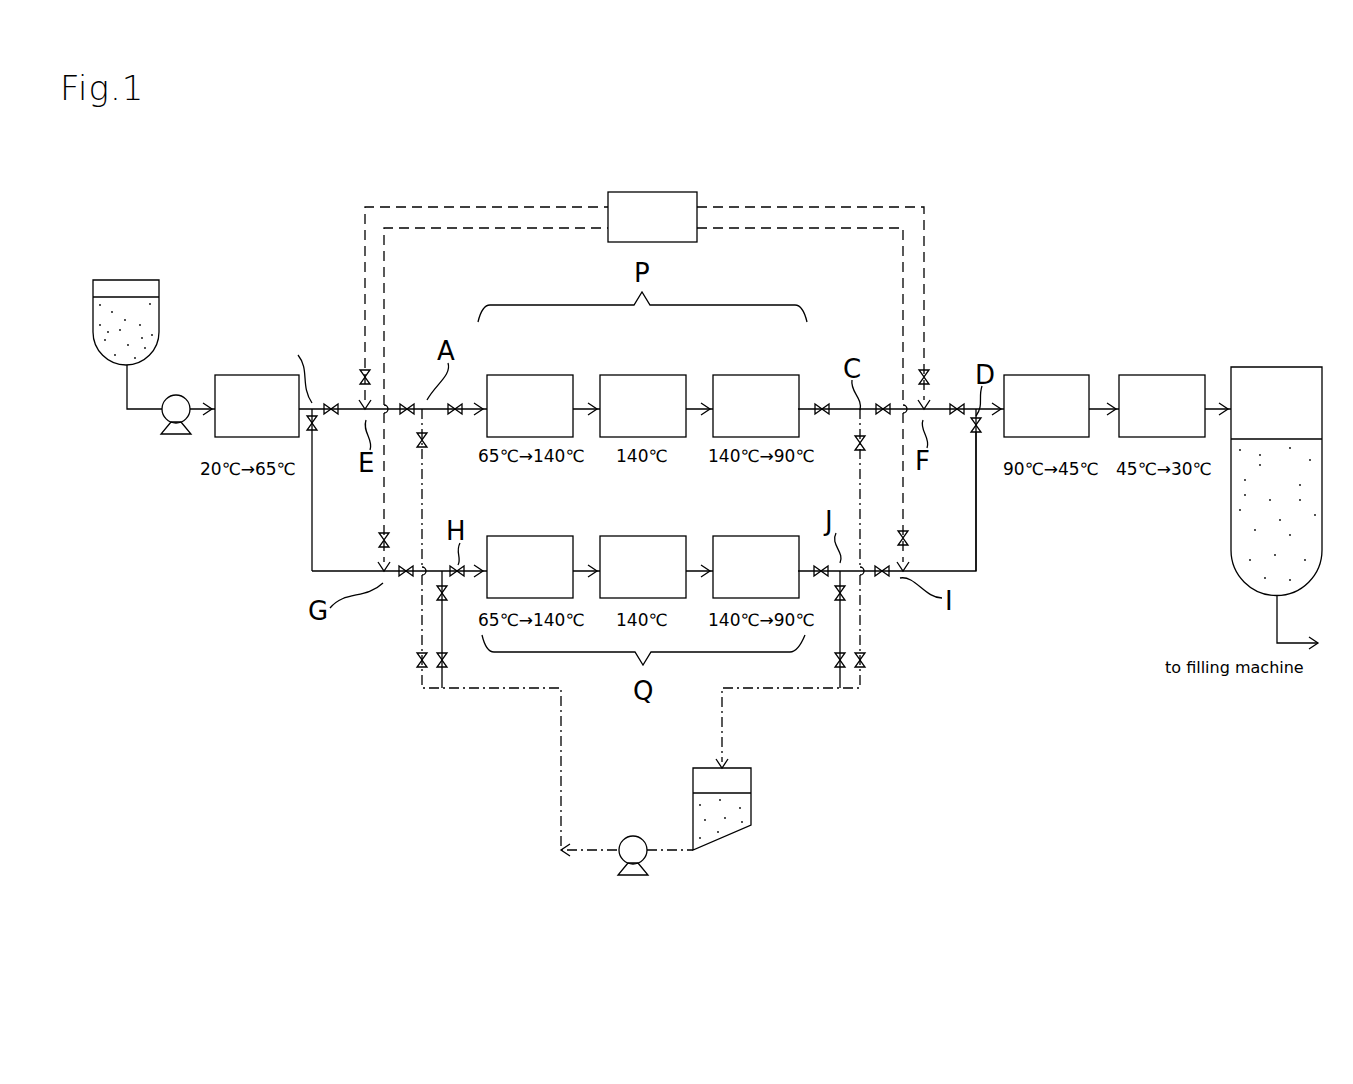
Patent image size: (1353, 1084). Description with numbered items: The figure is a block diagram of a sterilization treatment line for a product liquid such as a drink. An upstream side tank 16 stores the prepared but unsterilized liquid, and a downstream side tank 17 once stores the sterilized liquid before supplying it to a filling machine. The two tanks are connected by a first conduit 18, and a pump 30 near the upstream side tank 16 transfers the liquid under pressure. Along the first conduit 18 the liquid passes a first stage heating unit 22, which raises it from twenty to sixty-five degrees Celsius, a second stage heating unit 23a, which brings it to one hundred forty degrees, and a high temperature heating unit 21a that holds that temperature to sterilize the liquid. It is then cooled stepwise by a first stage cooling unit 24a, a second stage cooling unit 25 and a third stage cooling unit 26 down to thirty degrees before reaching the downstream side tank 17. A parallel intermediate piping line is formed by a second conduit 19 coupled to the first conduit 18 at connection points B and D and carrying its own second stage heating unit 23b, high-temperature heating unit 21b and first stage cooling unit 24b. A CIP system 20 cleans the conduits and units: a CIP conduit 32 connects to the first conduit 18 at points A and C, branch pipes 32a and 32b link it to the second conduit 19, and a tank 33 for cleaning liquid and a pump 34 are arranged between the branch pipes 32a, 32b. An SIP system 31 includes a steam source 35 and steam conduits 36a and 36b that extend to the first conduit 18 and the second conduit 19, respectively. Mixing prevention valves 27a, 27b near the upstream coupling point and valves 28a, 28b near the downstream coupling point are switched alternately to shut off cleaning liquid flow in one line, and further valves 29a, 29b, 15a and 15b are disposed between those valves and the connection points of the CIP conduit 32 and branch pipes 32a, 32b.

The valve 15a is at (882, 400).
The valve 15b is at (882, 582).
The upstream side tank 16 is at (130, 280).
The downstream side tank 17 is at (1272, 367).
The first conduit 18 is at (140, 412).
The second conduit 19 is at (312, 548).
The CIP system 20 is at (733, 846).
The high temperature heating unit 21a is at (651, 375).
The high-temperature heating unit 21b is at (651, 536).
The first stage heating unit 22 is at (257, 374).
The second stage heating unit 23a is at (536, 375).
The second stage heating unit 23b is at (536, 536).
The first stage cooling unit 24a is at (763, 375).
The first stage cooling unit 24b is at (763, 536).
The second stage cooling unit 25 is at (1046, 375).
The third stage cooling unit 26 is at (1159, 375).
The valve 27a is at (331, 400).
The valve 27b is at (318, 432).
The valve 28a is at (956, 400).
The valve 28b is at (972, 432).
The valve 29a is at (408, 400).
The valve 29b is at (408, 583).
The pump 30 is at (180, 395).
The SIP system 31 is at (727, 192).
The CIP conduit 32 is at (561, 772).
The branch pipe 32a is at (442, 640).
The branch pipe 32b is at (840, 640).
The tank 33 is at (751, 785).
The pump 34 is at (633, 836).
The steam source 35 is at (651, 192).
The steam conduit 36a is at (467, 207).
The steam conduit 36b is at (474, 228).